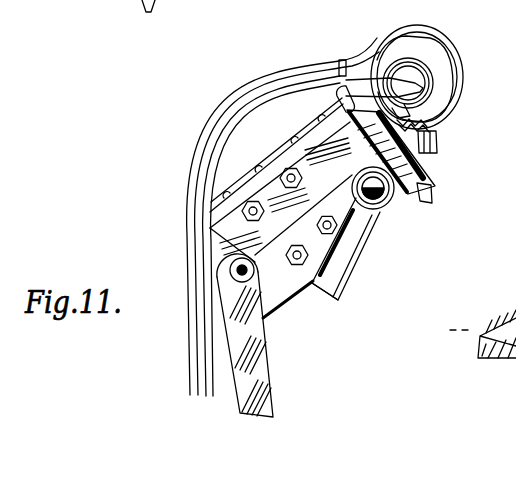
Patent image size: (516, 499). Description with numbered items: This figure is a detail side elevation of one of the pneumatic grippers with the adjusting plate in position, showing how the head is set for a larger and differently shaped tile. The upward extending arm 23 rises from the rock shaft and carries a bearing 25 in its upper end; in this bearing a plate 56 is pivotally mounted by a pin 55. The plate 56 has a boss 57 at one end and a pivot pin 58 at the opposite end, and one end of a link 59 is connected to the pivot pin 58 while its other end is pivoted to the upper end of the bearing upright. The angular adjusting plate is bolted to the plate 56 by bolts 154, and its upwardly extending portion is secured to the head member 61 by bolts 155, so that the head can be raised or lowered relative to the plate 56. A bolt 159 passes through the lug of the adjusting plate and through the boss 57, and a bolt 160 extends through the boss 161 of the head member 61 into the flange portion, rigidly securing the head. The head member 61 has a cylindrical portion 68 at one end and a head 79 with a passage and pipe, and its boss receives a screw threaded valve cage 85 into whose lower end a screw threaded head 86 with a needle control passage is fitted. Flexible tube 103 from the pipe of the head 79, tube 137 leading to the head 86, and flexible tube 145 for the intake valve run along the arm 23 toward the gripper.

The flexible tube 145 is at (208, 162).
The tube 137 is at (242, 122).
The flexible tube 103 is at (302, 92).
The bolt 160 is at (345, 118).
The boss 161 is at (367, 107).
The head 79 is at (417, 68).
The cylindrical portion 68 is at (438, 71).
The head member 61 is at (396, 113).
The valve cage 85 is at (430, 127).
The head 86 is at (437, 143).
The boss 57 is at (431, 178).
The bolt 159 is at (432, 195).
The bearing 25 is at (389, 206).
The pin 55 is at (367, 183).
The plate 56 is at (333, 250).
The upward extending arm 23 is at (347, 291).
The bolts 154 is at (297, 267).
The link 59 is at (262, 362).
The pivot pin 58 is at (242, 275).
The bolts 155 is at (249, 203).